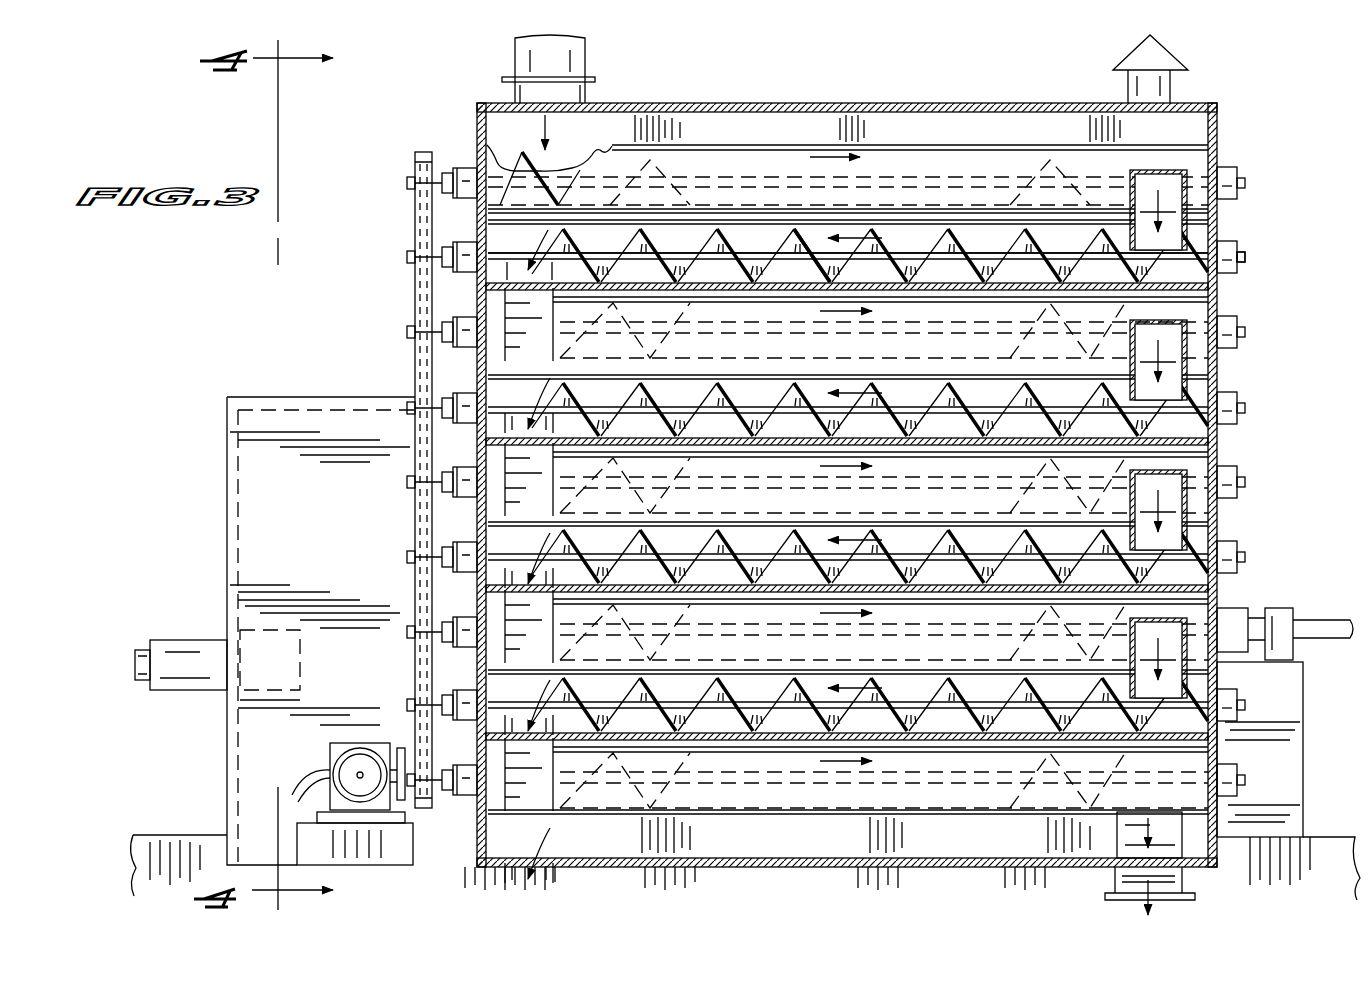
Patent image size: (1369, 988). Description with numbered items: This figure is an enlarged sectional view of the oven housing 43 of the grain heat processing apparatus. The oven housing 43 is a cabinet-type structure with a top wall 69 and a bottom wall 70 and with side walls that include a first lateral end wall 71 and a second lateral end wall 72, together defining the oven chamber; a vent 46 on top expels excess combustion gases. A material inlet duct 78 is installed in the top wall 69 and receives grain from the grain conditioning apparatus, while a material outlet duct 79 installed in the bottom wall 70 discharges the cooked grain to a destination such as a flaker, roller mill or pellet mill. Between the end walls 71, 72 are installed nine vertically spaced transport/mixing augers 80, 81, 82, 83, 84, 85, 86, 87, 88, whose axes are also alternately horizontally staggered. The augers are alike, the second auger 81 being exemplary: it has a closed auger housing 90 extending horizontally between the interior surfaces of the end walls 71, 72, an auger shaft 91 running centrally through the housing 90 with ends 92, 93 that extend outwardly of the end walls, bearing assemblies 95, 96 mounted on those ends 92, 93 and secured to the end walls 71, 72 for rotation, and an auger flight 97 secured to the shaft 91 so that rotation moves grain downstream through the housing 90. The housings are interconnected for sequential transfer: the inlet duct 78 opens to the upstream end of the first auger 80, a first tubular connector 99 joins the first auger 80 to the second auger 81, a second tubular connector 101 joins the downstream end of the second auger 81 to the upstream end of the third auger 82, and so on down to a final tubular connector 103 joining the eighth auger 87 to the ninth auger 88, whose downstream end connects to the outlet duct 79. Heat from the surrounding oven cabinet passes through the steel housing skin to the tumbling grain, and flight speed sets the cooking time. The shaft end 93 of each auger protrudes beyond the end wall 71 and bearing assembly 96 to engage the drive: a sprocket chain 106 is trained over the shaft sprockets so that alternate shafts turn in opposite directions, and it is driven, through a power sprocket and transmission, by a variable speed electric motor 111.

The oven housing 43 is at (903, 478).
The vent 46 is at (1170, 90).
The top wall 69 is at (860, 104).
The bottom wall 70 is at (845, 868).
The first lateral end wall 71 is at (478, 128).
The second lateral end wall 72 is at (1192, 378).
The material inlet duct 78 is at (585, 95).
The material outlet duct 79 is at (1195, 880).
The first auger 80 is at (1246, 172).
The second auger 81 is at (1250, 258).
The third auger 82 is at (1248, 332).
The fourth auger 83 is at (1248, 408).
The fifth auger 84 is at (1248, 484).
The sixth auger 85 is at (1248, 555).
The seventh auger 86 is at (1250, 612).
The eighth auger 87 is at (1248, 705).
The ninth auger 88 is at (1246, 774).
The auger housing 90 is at (985, 140).
The auger shaft 91 is at (1210, 232).
The auger shaft end 92 is at (1248, 250).
The auger shaft end 93 is at (430, 242).
The bearing assembly 95 is at (1242, 268).
The bearing assembly 96 is at (462, 270).
The auger flight 97 is at (812, 258).
The first tubular connector 99 is at (1208, 206).
The second tubular connector 101 is at (505, 342).
The final tubular connector 103 is at (555, 780).
The sprocket chain 106 is at (420, 574).
The variable speed electric motor 111 is at (345, 748).